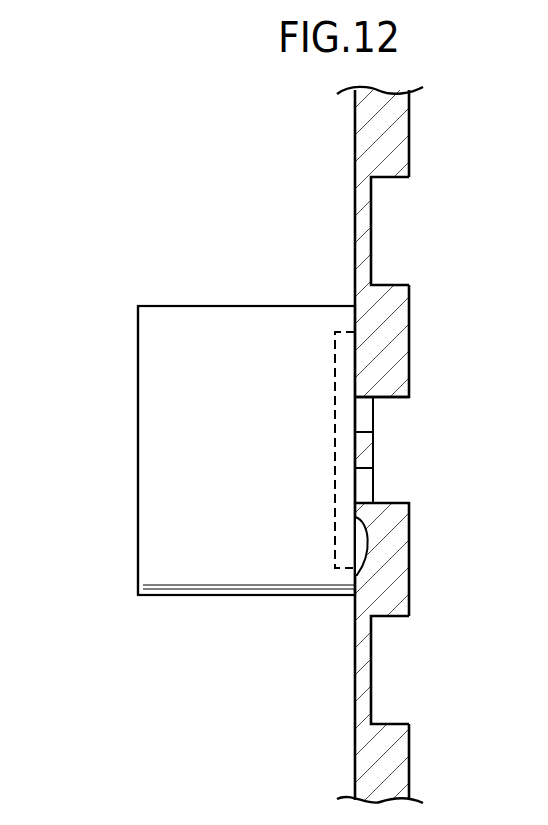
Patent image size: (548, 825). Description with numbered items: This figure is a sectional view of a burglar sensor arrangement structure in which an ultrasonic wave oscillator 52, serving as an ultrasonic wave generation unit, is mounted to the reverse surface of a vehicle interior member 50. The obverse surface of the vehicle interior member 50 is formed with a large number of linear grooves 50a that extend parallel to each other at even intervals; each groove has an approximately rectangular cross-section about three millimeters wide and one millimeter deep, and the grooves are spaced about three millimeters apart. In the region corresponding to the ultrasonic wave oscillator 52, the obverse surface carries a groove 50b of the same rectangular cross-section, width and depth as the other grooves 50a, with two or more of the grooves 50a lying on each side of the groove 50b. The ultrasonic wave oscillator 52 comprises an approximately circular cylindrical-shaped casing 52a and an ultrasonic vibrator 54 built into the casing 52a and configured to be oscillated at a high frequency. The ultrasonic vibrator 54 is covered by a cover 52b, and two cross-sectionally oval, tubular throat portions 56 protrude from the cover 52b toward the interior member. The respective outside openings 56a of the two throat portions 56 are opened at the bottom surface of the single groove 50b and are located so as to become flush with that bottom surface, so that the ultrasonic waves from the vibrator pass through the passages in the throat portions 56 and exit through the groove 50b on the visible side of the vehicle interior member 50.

The vehicle interior member 50 is at (410, 162).
The linear grooves 50a is at (392, 180).
The groove 50b is at (410, 401).
The ultrasonic wave oscillator 52 is at (172, 300).
The casing 52a is at (150, 437).
The cover 52b is at (357, 575).
The ultrasonic vibrator 54 is at (335, 452).
The throat portions 56 is at (362, 422).
The outside openings 56a is at (373, 408).